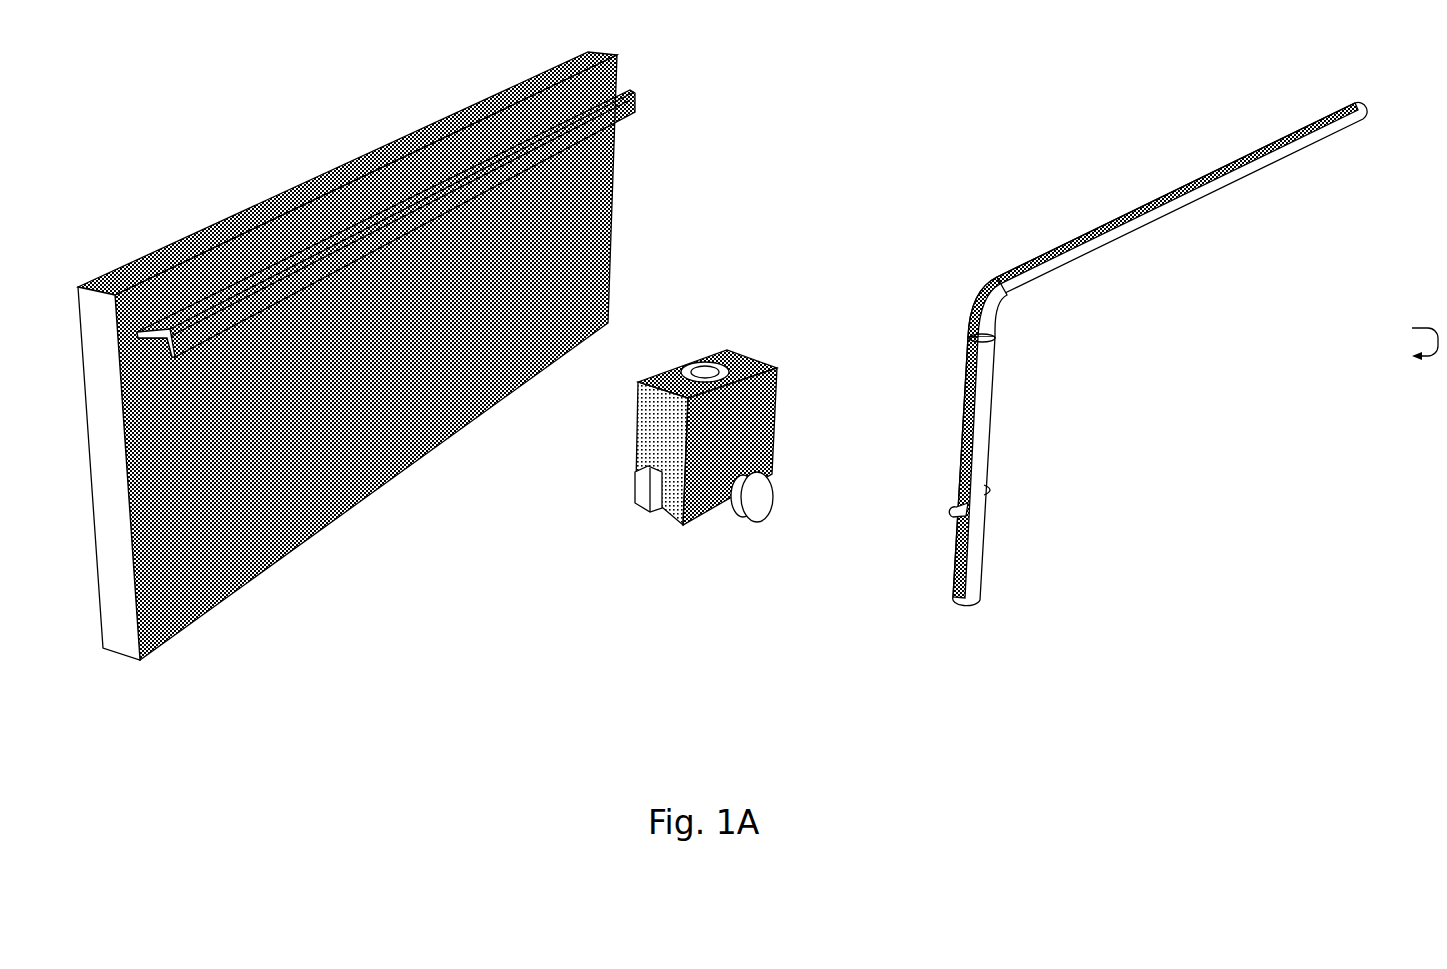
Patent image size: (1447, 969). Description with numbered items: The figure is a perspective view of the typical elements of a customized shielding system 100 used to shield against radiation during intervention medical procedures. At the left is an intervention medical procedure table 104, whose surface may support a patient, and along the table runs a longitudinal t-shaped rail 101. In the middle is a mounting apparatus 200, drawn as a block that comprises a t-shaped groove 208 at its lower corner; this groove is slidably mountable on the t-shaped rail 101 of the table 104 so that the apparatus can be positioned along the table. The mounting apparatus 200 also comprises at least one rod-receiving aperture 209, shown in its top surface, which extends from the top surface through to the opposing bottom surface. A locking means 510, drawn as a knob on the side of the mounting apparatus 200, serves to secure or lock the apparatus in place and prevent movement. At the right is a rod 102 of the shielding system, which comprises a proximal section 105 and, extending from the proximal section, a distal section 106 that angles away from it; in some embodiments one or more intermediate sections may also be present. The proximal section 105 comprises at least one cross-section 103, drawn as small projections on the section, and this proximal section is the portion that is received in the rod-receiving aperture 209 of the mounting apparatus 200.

The shielding system 100 is at (1158, 439).
The longitudinal t-shaped rail 101 is at (641, 93).
The rod 102 is at (985, 278).
The cross-section 103 is at (1004, 488).
The intervention medical procedure table 104 is at (614, 227).
The proximal section 105 is at (992, 400).
The distal section 106 is at (1292, 174).
The mounting apparatus 200 is at (772, 488).
The t-shaped groove 208 is at (650, 494).
The rod-receiving aperture 209 is at (703, 364).
The locking means 510 is at (750, 539).